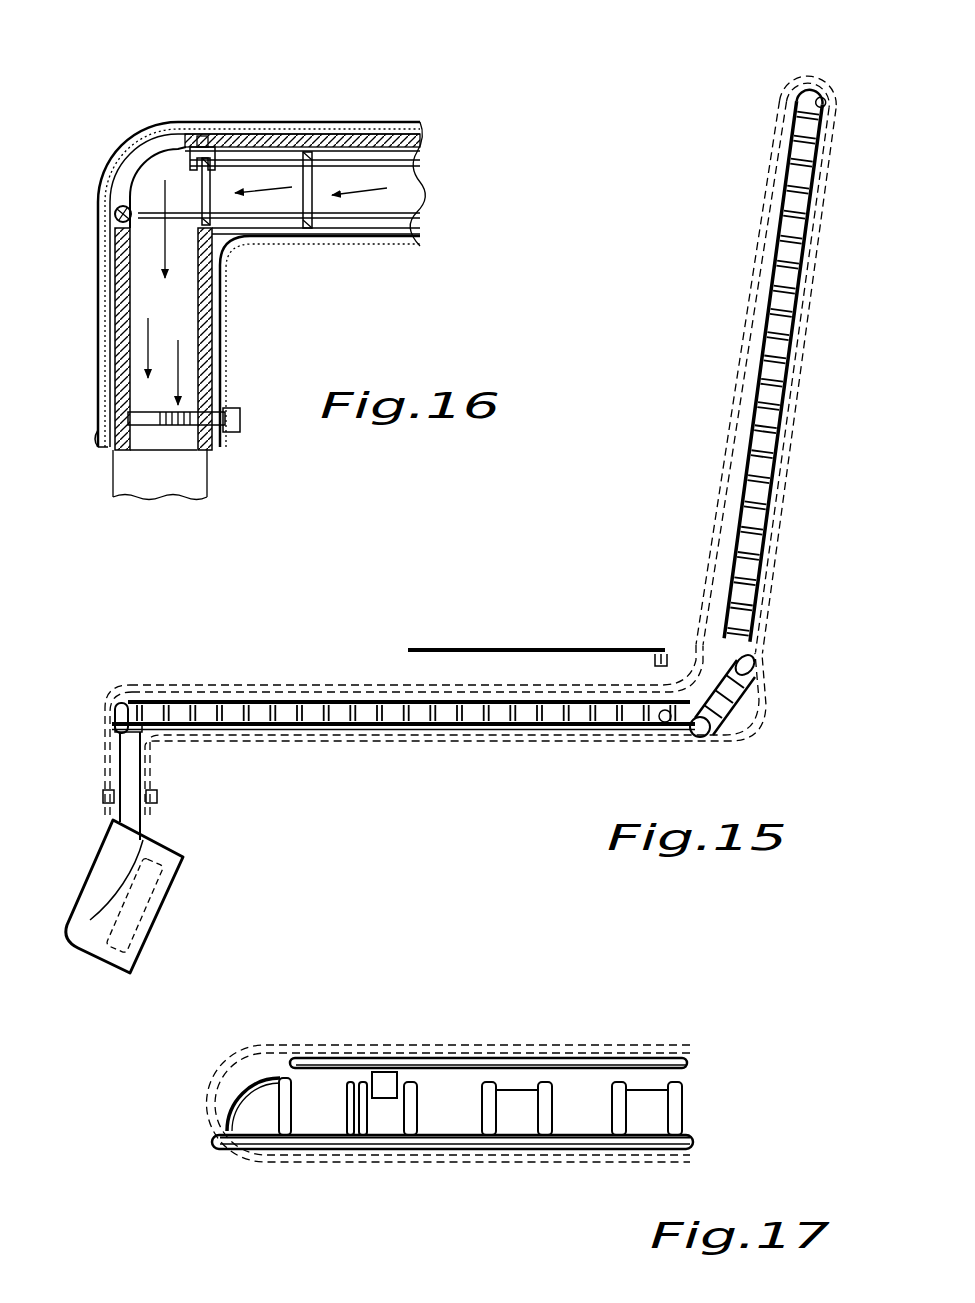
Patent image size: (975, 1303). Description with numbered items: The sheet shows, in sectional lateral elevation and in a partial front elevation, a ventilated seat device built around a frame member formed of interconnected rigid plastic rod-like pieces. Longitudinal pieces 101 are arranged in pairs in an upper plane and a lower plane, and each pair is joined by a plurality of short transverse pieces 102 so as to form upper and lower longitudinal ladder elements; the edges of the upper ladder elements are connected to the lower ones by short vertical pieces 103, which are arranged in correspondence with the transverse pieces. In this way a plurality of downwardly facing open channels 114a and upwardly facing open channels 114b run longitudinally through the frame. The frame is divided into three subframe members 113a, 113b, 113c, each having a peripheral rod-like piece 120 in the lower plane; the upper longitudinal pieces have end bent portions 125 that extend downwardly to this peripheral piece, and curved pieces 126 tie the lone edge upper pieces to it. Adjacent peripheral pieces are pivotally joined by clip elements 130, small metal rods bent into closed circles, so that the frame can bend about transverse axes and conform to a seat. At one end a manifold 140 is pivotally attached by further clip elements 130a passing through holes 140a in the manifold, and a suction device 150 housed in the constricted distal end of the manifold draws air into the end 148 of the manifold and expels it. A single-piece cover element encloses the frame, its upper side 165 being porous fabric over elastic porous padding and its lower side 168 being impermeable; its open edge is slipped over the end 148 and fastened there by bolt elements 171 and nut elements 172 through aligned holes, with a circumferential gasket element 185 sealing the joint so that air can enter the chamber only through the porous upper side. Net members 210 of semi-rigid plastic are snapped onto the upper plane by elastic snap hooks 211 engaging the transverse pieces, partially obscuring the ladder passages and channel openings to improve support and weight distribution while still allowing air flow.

In FIG. 16, the longitudinal pieces 101 is at (410, 175).
In FIG. 16, the short transverse pieces 102 is at (237, 133).
In FIG. 16, the short vertical pieces 103 is at (373, 250).
In FIG. 15, the subframe member 113a is at (802, 356).
In FIG. 15, the subframe member 113b is at (703, 665).
In FIG. 15, the subframe member 113c is at (360, 745).
In FIG. 17, the downwardly facing open channels 114a is at (253, 1123).
In FIG. 17, the upwardly facing open channels 114b is at (323, 1097).
In FIG. 16, the peripheral rod-like piece 120 is at (158, 210).
In FIG. 15, the peripheral rod-like piece 120 is at (762, 533).
In FIG. 17, the peripheral rod-like piece 120 is at (689, 1143).
In FIG. 16, the end bent portions 125 is at (175, 158).
In FIG. 15, the end bent portions 125 is at (812, 82).
In FIG. 17, the end bent portions 125 is at (353, 1120).
In FIG. 15, the curved pieces 126 is at (800, 280).
In FIG. 17, the curved pieces 126 is at (243, 1100).
In FIG. 15, the clip elements 130 is at (745, 667).
In FIG. 16, the clip elements 130a is at (113, 183).
In FIG. 15, the manifold 140 is at (90, 860).
In FIG. 16, the holes 140a is at (110, 300).
In FIG. 16, the end of the manifold 148 is at (203, 327).
In FIG. 15, the end of the manifold 148 is at (122, 770).
In FIG. 15, the suction device 150 is at (150, 920).
In FIG. 16, the upper side 165 is at (337, 123).
In FIG. 15, the upper side 165 is at (300, 680).
In FIG. 17, the upper side 165 is at (445, 1040).
In FIG. 15, the lower side 168 is at (438, 745).
In FIG. 16, the bolt elements 171 is at (95, 417).
In FIG. 16, the nut elements 172 is at (230, 410).
In FIG. 16, the circumferential gasket element 185 is at (223, 437).
In FIG. 15, the circumferential gasket element 185 is at (150, 793).
In FIG. 16, the net members 210 is at (410, 122).
In FIG. 15, the net members 210 is at (782, 198).
In FIG. 16, the elastic snap hooks 211 is at (197, 133).